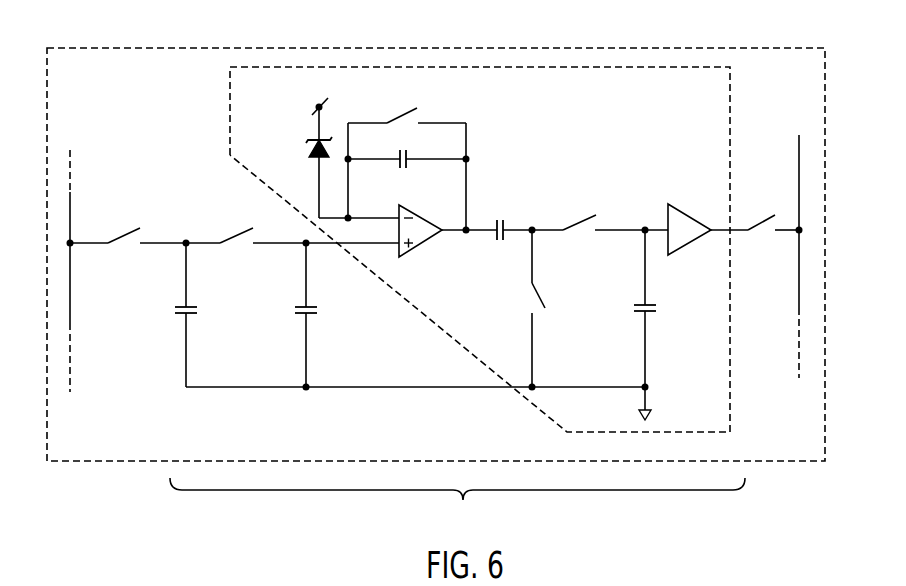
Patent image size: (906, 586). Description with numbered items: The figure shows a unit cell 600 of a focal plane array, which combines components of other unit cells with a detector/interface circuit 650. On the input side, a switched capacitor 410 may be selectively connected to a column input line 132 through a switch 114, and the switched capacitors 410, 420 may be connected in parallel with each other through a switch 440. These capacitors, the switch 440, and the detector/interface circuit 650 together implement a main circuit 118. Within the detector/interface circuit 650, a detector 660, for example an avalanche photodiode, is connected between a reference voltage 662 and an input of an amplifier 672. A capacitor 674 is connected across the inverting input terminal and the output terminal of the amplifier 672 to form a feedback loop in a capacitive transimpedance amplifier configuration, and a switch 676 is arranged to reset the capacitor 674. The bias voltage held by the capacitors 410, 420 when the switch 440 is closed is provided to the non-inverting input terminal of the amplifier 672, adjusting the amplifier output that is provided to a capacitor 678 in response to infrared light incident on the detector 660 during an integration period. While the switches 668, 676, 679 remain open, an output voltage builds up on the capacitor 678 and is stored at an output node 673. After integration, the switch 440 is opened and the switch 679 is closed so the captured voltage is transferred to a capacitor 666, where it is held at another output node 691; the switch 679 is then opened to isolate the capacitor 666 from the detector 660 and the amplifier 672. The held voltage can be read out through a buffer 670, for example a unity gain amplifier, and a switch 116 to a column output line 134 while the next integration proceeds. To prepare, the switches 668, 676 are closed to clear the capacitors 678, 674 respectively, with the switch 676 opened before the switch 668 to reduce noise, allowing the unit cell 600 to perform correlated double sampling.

The unit cell 600 is at (763, 47).
The detector/interface circuit 650 is at (651, 113).
The column input line 132 is at (71, 372).
The column output line 134 is at (798, 360).
The switch 114 is at (121, 229).
The switch 440 is at (240, 228).
The switched capacitor 410 is at (200, 310).
The switched capacitor 420 is at (320, 310).
The reference voltage 662 is at (315, 105).
The detector 660 is at (306, 146).
The switch 676 is at (398, 114).
The capacitor 674 is at (408, 166).
The amplifier 672 is at (424, 249).
The capacitor 678 is at (501, 213).
The output node 673 is at (536, 232).
The switch 668 is at (546, 308).
The switch 679 is at (578, 213).
The output node 691 is at (644, 222).
The buffer 670 is at (682, 210).
The capacitor 666 is at (659, 308).
The switch 116 is at (756, 213).
The main circuit 118 is at (457, 504).